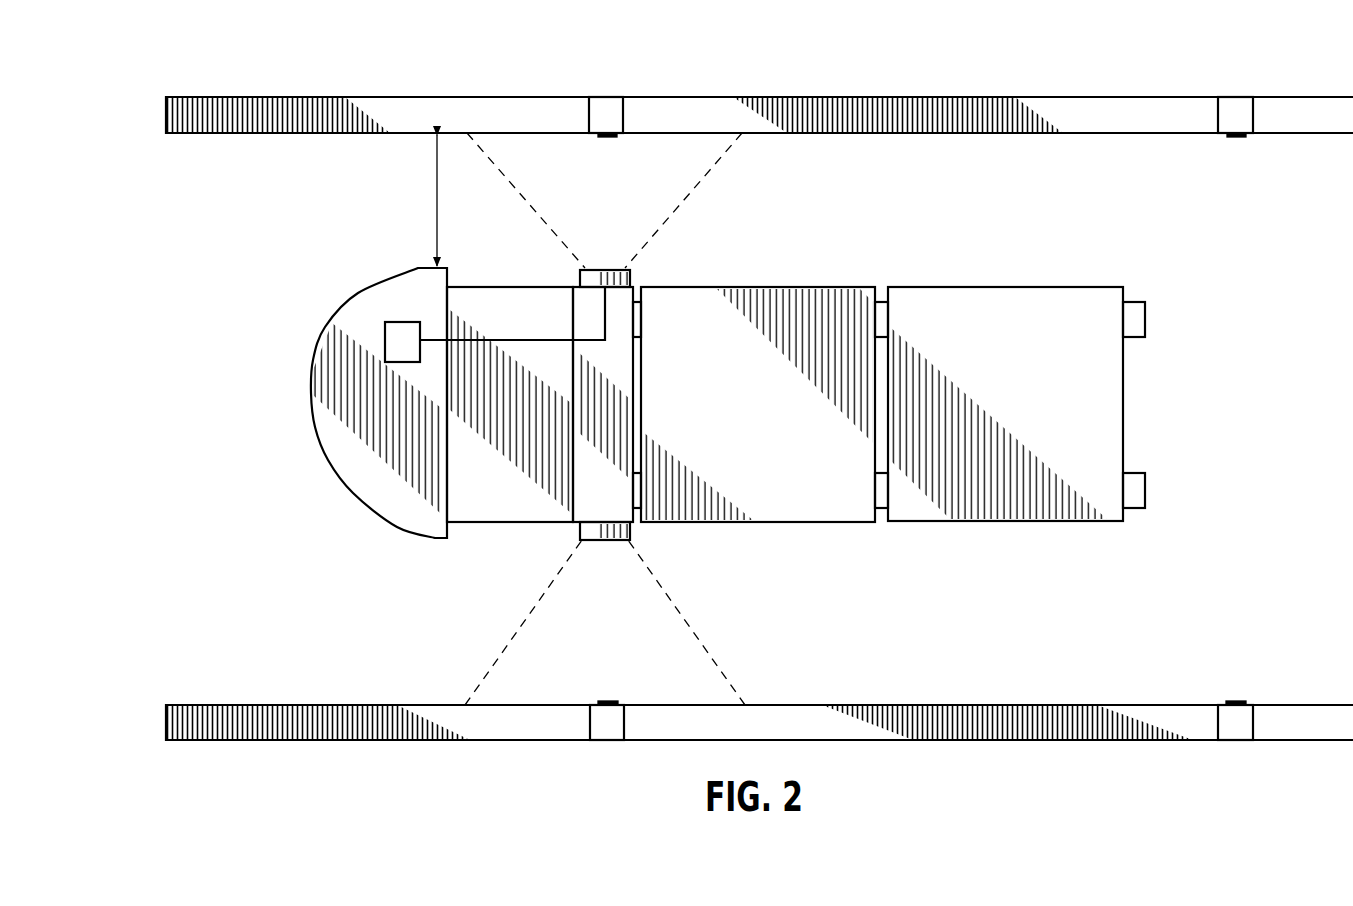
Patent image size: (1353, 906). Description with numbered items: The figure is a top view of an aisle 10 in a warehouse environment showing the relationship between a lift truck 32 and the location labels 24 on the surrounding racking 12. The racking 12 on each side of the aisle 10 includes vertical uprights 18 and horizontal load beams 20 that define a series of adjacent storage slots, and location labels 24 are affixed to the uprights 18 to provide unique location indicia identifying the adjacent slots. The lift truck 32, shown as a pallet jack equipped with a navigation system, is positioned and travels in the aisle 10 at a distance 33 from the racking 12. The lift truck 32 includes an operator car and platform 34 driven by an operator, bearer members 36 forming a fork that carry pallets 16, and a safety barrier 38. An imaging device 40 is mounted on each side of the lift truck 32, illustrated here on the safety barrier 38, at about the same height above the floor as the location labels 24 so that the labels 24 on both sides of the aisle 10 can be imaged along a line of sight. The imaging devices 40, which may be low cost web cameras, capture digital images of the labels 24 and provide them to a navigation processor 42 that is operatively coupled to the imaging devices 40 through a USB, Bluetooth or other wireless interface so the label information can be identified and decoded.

The aisle 10 is at (145, 445).
The racking 12 is at (213, 95).
The pallets 16 is at (803, 288).
The uprights 18 is at (623, 115).
The load beams 20 is at (1077, 120).
The location labels 24 is at (608, 140).
The lift truck 32 is at (378, 283).
The distance 33 is at (432, 200).
The operator car and platform 34 is at (484, 522).
The bearer members 36 is at (1145, 320).
The safety barrier 38 is at (590, 495).
The imaging device 40 is at (633, 275).
The navigation processor 42 is at (385, 324).